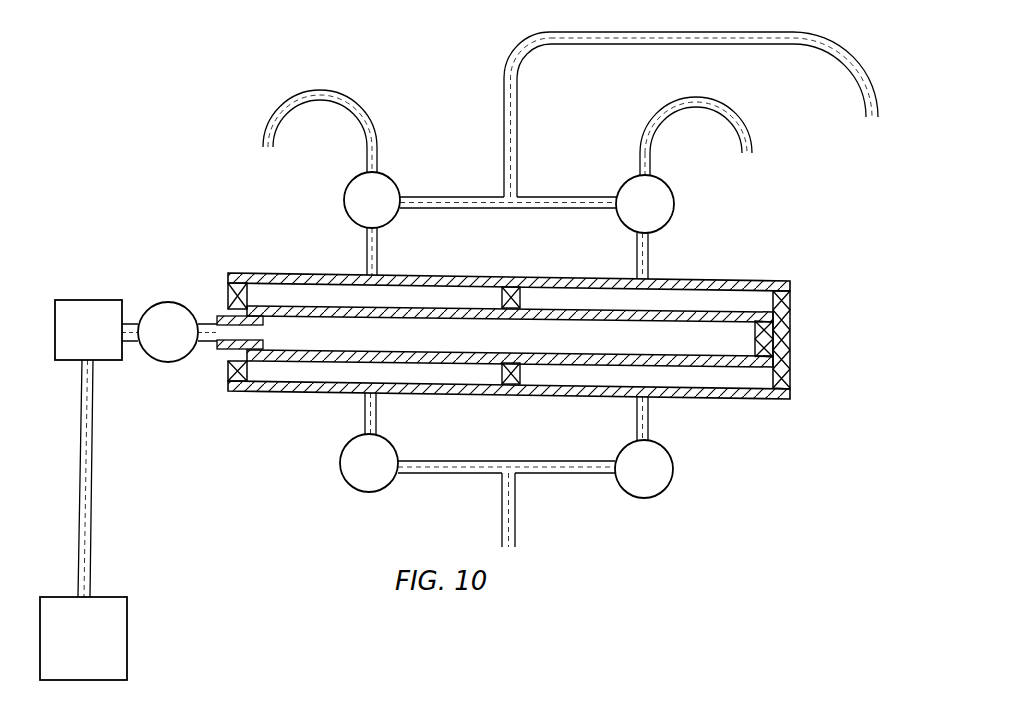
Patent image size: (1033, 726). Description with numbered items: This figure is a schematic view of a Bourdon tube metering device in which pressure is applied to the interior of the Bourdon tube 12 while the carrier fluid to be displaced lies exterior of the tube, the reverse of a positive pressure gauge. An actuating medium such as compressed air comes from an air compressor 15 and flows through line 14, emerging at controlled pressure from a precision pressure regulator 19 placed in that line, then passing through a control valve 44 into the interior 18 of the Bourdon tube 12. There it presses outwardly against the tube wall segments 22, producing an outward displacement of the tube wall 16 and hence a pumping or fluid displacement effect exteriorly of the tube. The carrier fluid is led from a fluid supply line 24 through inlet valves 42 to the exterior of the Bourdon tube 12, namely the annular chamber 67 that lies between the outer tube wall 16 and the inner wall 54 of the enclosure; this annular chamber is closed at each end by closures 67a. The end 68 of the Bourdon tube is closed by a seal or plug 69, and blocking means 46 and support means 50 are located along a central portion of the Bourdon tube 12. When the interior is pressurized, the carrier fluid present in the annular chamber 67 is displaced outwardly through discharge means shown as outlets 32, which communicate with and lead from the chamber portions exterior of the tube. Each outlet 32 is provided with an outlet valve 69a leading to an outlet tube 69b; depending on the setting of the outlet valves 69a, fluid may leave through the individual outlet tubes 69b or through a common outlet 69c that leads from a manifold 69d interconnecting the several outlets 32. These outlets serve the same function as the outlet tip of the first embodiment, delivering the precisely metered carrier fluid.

The Bourdon tube 12 is at (666, 312).
The line 14 is at (93, 452).
The air compressor 15 is at (122, 620).
The tube wall 16 is at (582, 369).
The interior 18 is at (423, 343).
The pressure regulator 19 is at (55, 318).
The tube wall segments 22 is at (397, 308).
The fluid supply line 24 is at (515, 528).
The outlets 32 is at (377, 240).
The inlet valves 42 is at (342, 465).
The control valve 44 is at (160, 303).
The blocking means 46 is at (510, 287).
The support means 50 is at (548, 319).
The inner wall of the enclosure 54 is at (303, 380).
The annular chamber 67 is at (343, 378).
The closures 67a is at (230, 290).
The end of the Bourdon tube 68 is at (760, 374).
The seal or plug 69 is at (767, 348).
The outlet valves 69a is at (436, 188).
The outlet tubes 69b is at (420, 154).
The common outlet 69c is at (858, 80).
The manifold 69d is at (603, 190).